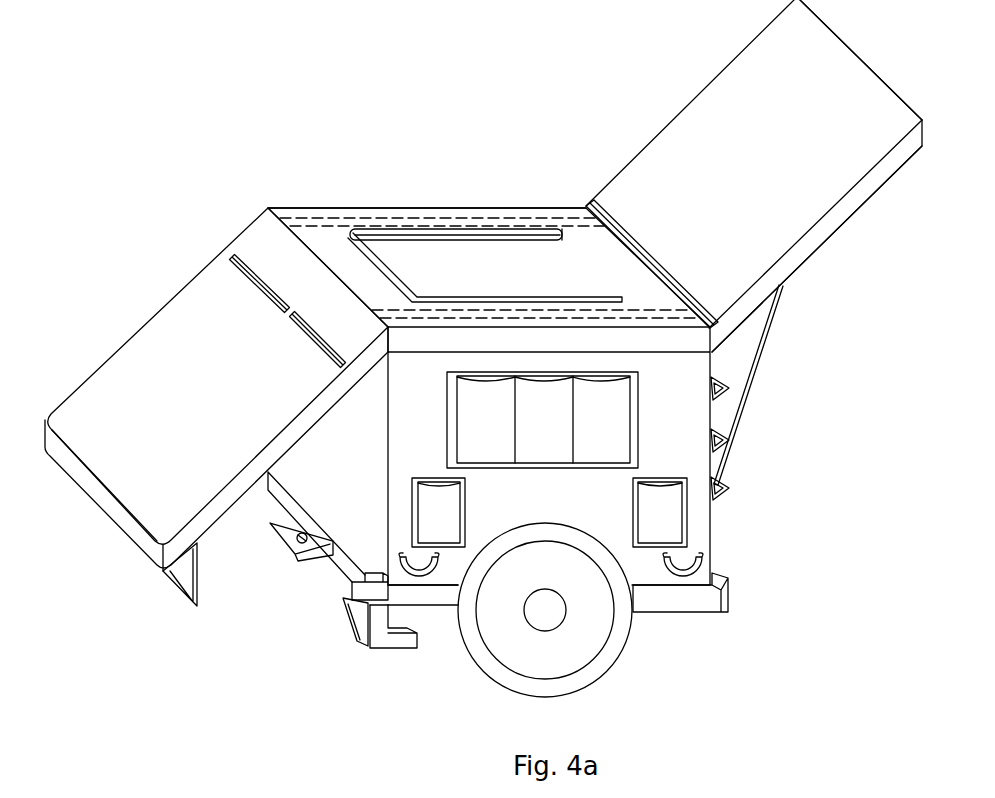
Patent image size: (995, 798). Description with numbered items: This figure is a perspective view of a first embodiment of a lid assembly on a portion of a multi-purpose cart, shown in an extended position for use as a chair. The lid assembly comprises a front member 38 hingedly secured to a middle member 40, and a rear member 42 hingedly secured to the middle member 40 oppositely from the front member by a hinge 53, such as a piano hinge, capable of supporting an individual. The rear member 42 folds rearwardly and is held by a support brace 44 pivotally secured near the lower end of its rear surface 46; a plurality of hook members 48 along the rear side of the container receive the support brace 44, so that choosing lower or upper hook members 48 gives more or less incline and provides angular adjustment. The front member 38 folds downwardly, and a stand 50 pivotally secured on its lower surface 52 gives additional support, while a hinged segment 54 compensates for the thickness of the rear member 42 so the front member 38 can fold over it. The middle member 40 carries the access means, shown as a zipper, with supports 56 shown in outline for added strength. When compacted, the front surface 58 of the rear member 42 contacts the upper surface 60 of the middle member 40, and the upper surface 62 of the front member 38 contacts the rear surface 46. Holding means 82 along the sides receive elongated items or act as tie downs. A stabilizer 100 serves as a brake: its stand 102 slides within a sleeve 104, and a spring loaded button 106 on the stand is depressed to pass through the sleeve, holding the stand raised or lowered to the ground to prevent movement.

The front member 38 is at (192, 323).
The middle member 40 is at (320, 218).
The rear member 42 is at (830, 195).
The support brace 44 is at (762, 358).
The rear surface 46 is at (880, 188).
The hook members 48 is at (730, 492).
The stand 50 is at (200, 587).
The lower surface 52 is at (222, 500).
The hinge 53 is at (600, 208).
The hinged segment 54 is at (252, 252).
The supports 56 is at (435, 220).
The front surface 58 is at (843, 53).
The upper surface 60 is at (313, 208).
The upper surface 62 is at (118, 380).
The holding means 82 is at (700, 563).
The stabilizer 100 is at (356, 676).
The stand 102 is at (402, 642).
The sleeve 104 is at (353, 593).
The spring loaded button 106 is at (352, 617).